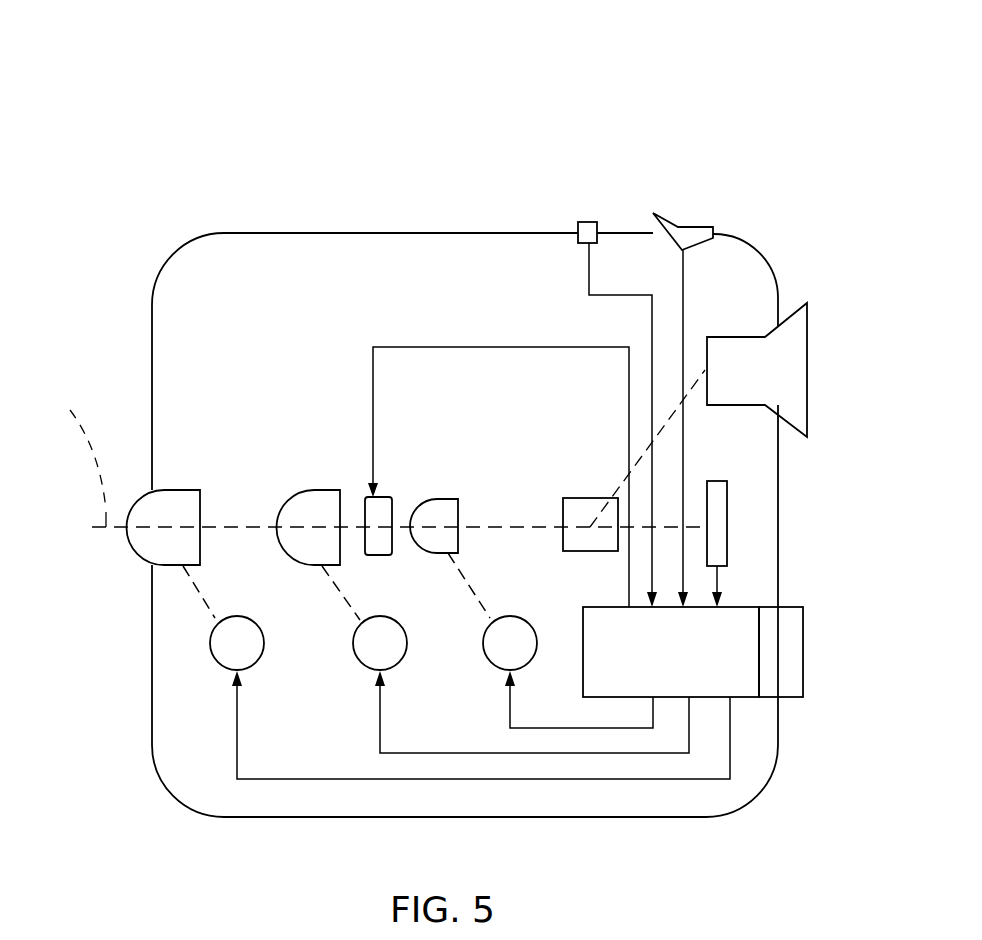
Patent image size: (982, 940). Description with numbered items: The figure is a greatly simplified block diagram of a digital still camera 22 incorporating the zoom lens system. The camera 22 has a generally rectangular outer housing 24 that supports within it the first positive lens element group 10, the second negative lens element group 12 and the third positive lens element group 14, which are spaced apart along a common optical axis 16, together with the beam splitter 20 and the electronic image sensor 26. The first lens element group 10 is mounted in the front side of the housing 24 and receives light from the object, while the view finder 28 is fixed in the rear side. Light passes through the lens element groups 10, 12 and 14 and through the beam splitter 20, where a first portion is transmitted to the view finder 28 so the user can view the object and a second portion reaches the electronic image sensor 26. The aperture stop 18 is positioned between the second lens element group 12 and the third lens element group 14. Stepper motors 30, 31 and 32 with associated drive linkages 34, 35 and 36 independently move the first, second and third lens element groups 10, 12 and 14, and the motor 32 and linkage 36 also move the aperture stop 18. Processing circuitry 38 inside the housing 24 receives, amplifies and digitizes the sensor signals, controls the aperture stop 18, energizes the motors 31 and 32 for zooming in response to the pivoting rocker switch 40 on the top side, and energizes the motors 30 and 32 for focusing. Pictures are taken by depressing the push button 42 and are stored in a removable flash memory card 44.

The first positive lens element group 10 is at (137, 558).
The second negative lens element group 12 is at (317, 490).
The third positive lens element group 14 is at (451, 500).
The common optical axis 16 is at (74, 456).
The aperture stop 18 is at (383, 497).
The beam splitter 20 is at (583, 498).
The digital still camera 22 is at (205, 167).
The outer housing 24 is at (562, 817).
The electronic image sensor 26 is at (727, 502).
The view finder 28 is at (795, 308).
The stepper motor 30 is at (212, 660).
The stepper motor 31 is at (355, 655).
The stepper motor 32 is at (490, 662).
The drive linkage 34 is at (199, 597).
The drive linkage 35 is at (340, 593).
The drive linkage 36 is at (468, 590).
The processing circuitry 38 is at (747, 698).
The pivoting rocker switch 40 is at (660, 215).
The push button 42 is at (588, 222).
The flash memory card 44 is at (805, 630).